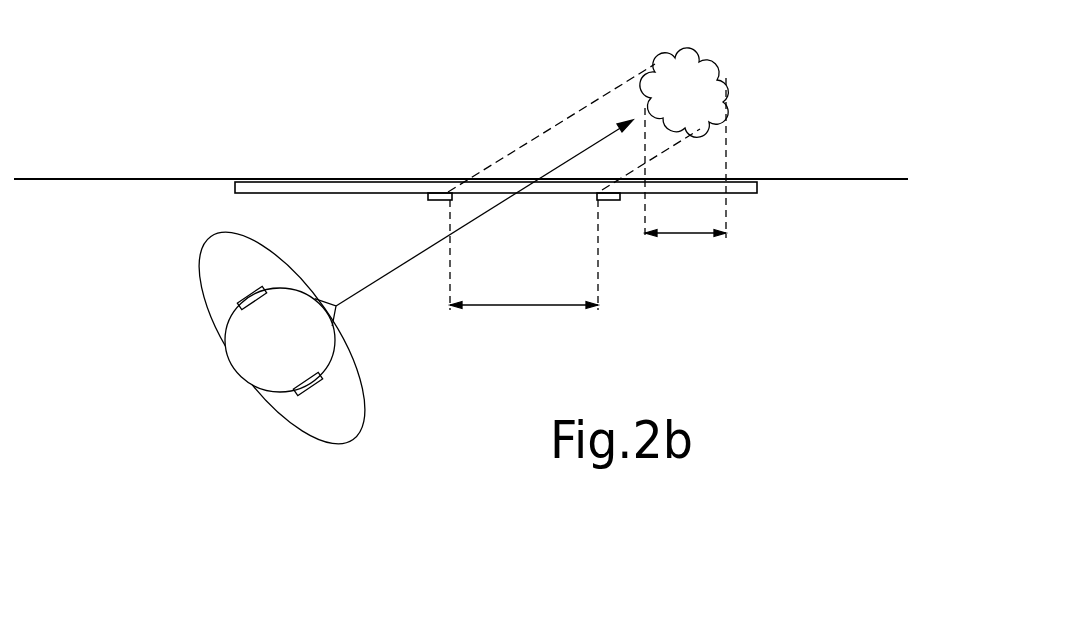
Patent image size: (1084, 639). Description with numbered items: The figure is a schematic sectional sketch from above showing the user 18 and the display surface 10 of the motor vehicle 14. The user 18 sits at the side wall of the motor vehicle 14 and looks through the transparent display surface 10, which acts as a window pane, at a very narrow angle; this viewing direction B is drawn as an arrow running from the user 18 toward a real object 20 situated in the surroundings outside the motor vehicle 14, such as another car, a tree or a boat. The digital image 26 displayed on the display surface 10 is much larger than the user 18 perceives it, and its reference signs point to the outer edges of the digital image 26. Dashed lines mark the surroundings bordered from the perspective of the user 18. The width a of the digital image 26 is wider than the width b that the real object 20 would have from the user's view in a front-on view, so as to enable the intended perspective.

The motor vehicle 14 is at (120, 178).
The display surface 10 is at (305, 181).
The digital image 26 is at (439, 191).
The real object 20 is at (715, 62).
The user 18 is at (248, 365).
The viewing direction B is at (518, 189).
The width of the digital image a is at (524, 255).
The width of the real object b is at (685, 158).